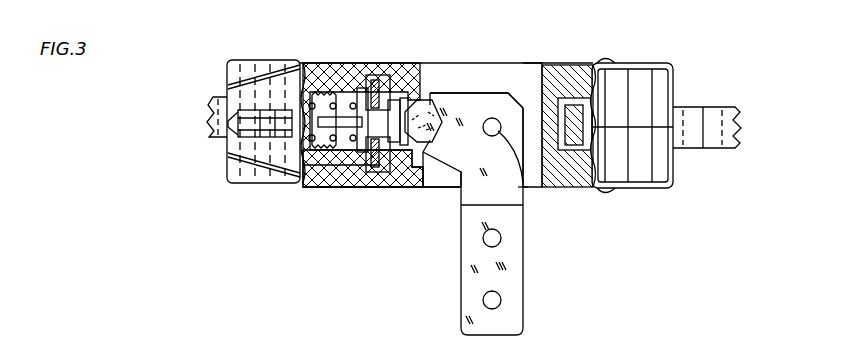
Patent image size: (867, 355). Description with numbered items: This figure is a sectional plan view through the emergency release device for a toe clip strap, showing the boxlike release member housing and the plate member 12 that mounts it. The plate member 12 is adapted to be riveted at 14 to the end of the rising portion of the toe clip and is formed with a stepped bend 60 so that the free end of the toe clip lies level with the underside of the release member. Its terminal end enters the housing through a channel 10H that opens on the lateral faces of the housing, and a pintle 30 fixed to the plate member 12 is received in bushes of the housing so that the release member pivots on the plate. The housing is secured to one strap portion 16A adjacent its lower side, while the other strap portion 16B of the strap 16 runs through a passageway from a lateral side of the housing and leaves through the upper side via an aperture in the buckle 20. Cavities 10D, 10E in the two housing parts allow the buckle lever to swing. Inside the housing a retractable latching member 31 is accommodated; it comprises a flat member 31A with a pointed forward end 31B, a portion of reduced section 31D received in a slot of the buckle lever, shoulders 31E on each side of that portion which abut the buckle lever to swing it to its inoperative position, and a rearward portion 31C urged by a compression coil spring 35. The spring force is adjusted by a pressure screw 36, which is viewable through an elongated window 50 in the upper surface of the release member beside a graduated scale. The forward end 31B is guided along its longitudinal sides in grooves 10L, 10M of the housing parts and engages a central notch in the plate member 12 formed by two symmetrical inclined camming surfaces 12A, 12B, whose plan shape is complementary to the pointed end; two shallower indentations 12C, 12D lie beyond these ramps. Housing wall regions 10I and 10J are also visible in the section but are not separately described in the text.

The cavity 10D is at (340, 63).
The cavity 10E is at (348, 187).
The channel 10H is at (533, 68).
The housing top wall 10I is at (505, 63).
The housing bottom wall 10J is at (445, 190).
The groove 10L is at (450, 85).
The groove 10M is at (421, 184).
The plate member 12 is at (522, 262).
The inclined camming surface 12A is at (440, 105).
The inclined camming surface 12B is at (440, 140).
The indentation 12C is at (440, 88).
The indentation 12D is at (458, 168).
The rivet location 14 is at (485, 298).
The strap 16 is at (728, 103).
The strap portion 16A is at (213, 97).
The strap portion 16B is at (577, 108).
The buckle 20 is at (362, 67).
The pintle 30 is at (527, 187).
The retractable latching member 31 is at (330, 75).
The flat member 31A is at (397, 98).
The pointed forward end 31B is at (437, 122).
The rearward portion 31C is at (303, 183).
The portion of reduced section 31D is at (350, 182).
The shoulders 31E is at (398, 80).
The compression coil spring 35 is at (313, 72).
The pressure screw 36 is at (272, 123).
The elongated window 50 is at (270, 112).
The stepped bend 60 is at (510, 207).